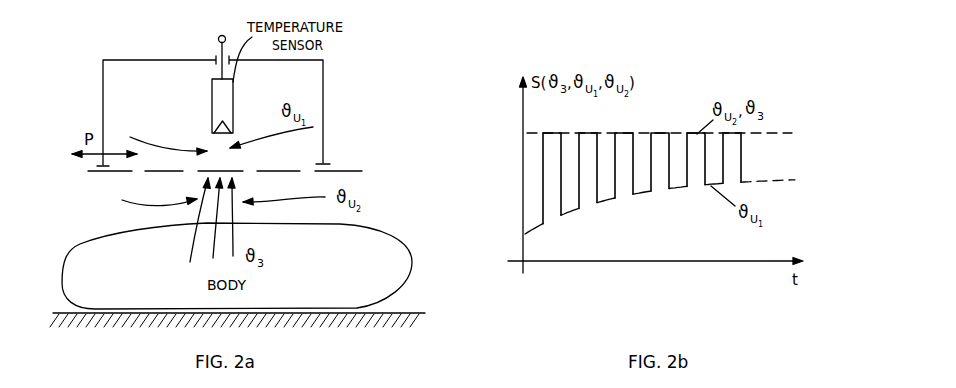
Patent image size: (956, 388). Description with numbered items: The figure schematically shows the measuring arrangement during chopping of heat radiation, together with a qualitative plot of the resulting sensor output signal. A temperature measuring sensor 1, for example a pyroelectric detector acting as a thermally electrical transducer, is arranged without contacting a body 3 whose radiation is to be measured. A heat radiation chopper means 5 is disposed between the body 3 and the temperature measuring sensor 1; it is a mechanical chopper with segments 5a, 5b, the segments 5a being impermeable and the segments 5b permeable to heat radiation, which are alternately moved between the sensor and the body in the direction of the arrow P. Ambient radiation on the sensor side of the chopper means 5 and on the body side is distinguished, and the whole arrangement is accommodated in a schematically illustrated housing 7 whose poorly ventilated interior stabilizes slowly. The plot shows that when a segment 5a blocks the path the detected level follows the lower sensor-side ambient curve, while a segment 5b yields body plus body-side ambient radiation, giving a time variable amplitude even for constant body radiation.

The temperature measuring sensor 1 is at (234, 93).
The housing 7 is at (323, 92).
The heat radiation chopper means 5 is at (209, 172).
The segment impermeable to heat radiation 5a is at (110, 173).
The segment permeable to heat radiation 5b is at (140, 173).
The body 3 is at (388, 253).